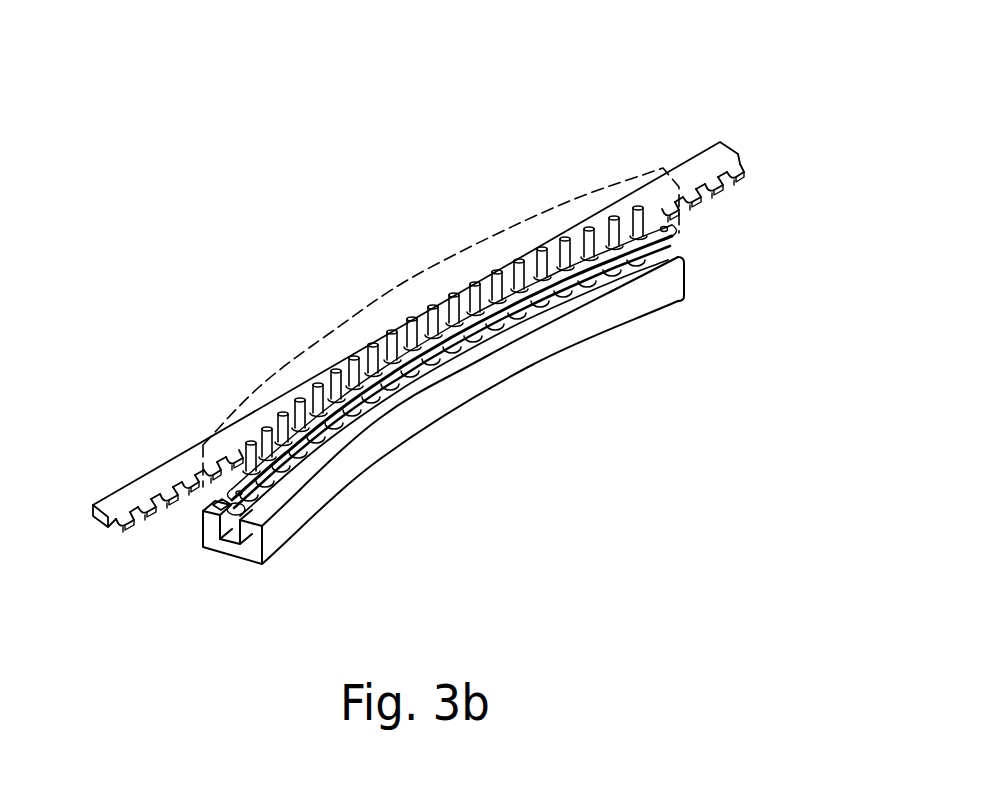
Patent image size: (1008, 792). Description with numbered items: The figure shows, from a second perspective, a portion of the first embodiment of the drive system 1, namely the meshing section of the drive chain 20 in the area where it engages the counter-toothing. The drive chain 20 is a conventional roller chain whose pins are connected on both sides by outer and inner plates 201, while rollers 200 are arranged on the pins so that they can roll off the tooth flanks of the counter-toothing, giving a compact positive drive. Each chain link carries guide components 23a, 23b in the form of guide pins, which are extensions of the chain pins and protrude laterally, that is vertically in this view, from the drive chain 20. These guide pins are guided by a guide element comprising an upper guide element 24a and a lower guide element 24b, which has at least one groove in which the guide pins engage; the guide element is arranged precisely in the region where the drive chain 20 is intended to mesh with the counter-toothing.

The drive system 1 is at (602, 101).
The drive chain 20 is at (487, 312).
The rollers 200 is at (664, 250).
The plates 201 is at (625, 260).
The guide component 23a is at (275, 452).
The guide component 23b is at (209, 501).
The upper guide element 24a is at (420, 282).
The lower guide element 24b is at (402, 418).